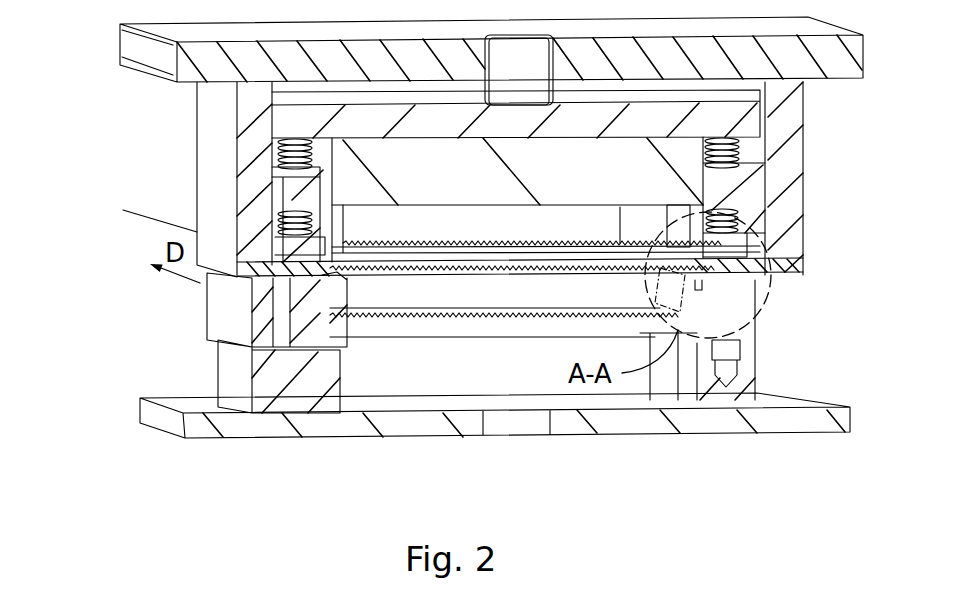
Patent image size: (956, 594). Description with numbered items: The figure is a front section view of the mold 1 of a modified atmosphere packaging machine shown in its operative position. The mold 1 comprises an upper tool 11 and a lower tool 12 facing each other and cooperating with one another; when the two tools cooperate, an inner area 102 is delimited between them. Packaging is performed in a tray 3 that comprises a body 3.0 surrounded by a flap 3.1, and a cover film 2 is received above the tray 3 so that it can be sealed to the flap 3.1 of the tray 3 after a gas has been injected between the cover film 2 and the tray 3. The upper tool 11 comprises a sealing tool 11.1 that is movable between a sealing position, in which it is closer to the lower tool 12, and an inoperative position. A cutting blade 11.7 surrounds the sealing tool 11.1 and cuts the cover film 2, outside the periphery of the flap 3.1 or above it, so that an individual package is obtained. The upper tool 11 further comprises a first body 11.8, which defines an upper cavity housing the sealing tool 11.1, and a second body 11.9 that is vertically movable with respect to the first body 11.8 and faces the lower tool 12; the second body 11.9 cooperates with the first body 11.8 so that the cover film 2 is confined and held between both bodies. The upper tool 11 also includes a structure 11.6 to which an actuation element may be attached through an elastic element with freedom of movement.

The mold 1 is at (70, 45).
The cover film 2 is at (177, 213).
The tray 3 is at (511, 328).
The body 3.0 is at (720, 307).
The flap 3.1 is at (700, 282).
The upper tool 11 is at (817, 203).
The sealing tool 11.1 is at (360, 188).
The structure 11.6 is at (743, 118).
The cutting blade 11.7 is at (517, 205).
The first body 11.8 is at (210, 100).
The second body 11.9 is at (788, 267).
The lower tool 12 is at (198, 324).
The inner area 102 is at (637, 212).